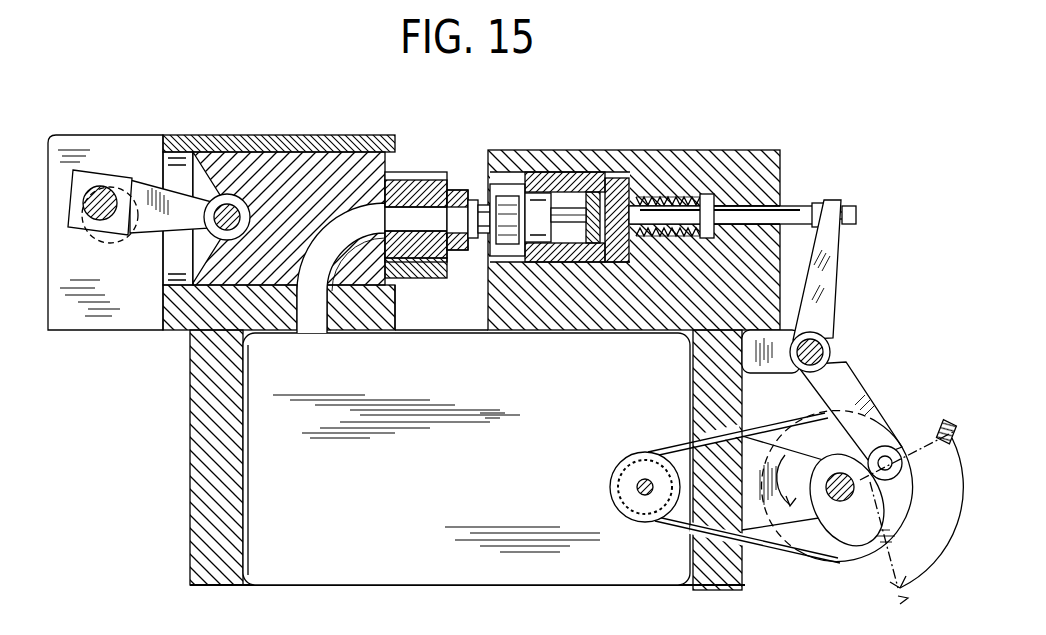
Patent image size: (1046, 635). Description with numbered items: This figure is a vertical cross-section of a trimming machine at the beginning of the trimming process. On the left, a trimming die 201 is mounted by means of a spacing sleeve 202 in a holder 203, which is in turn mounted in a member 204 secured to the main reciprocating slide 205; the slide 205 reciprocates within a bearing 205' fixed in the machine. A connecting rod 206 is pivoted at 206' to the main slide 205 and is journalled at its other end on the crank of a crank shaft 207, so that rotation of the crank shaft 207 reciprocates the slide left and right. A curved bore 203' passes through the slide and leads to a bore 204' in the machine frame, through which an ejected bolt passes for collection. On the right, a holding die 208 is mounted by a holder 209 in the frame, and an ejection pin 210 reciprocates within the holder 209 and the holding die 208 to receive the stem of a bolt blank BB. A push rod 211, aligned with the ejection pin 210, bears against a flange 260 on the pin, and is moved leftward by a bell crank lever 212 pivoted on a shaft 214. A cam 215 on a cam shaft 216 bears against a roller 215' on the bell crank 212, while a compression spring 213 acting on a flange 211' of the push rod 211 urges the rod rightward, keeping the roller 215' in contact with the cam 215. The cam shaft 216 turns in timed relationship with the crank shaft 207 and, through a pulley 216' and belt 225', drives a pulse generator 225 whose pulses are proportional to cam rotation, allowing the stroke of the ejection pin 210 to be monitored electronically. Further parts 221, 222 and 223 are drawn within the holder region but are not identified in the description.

The trimming die 201 is at (466, 205).
The spacing sleeve 202 is at (420, 278).
The holder 203 is at (435, 182).
The curved bore 203' is at (327, 266).
The member 204 is at (410, 176).
The bore 204' is at (466, 444).
The main reciprocating slide 205 is at (289, 176).
The bearing 205' is at (266, 117).
The connecting rod 206 is at (140, 189).
The pivot 206' is at (235, 169).
The crank shaft 207 is at (102, 220).
The holding die 208 is at (492, 240).
The holder 209 is at (500, 172).
The ejection pin 210 is at (565, 250).
The push rod 211 is at (742, 192).
The flange 211' is at (744, 240).
The bell crank lever 212 is at (834, 284).
The compression spring 213 is at (685, 186).
The shaft 214 is at (831, 350).
The cam 215 is at (792, 518).
The roller 215' is at (905, 438).
The cam shaft 216 is at (847, 493).
The pulley 216' is at (854, 486).
The end cap 221 is at (615, 186).
The seal 222 is at (593, 200).
The piston 223 is at (538, 196).
The pulse generator 225 is at (607, 487).
The belt 225' is at (726, 480).
The flange 260 is at (703, 238).
The bolt blank BB is at (482, 205).